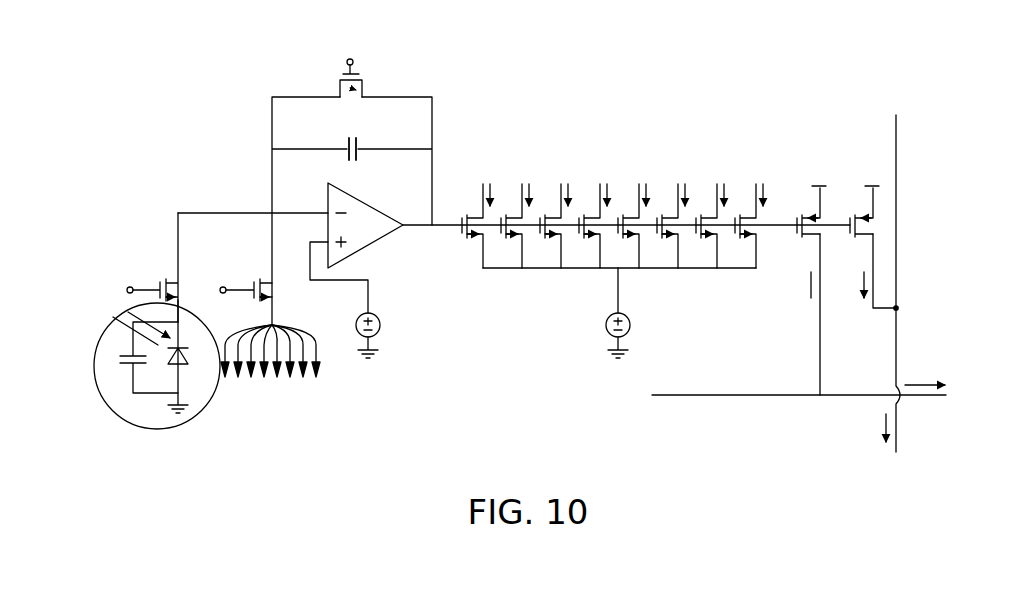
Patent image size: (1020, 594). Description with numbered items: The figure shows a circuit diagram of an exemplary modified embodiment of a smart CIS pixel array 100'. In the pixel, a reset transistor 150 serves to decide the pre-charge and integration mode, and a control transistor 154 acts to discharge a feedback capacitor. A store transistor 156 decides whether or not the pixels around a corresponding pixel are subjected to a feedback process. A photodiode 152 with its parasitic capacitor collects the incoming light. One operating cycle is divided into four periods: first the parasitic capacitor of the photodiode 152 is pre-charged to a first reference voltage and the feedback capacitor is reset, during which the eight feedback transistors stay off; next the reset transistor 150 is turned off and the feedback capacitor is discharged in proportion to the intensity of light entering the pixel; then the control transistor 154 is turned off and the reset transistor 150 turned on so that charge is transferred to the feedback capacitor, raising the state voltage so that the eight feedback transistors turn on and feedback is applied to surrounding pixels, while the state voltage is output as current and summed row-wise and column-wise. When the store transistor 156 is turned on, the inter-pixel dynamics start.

The smart CIS pixel array 100' is at (537, 261).
The RST transistor 150 is at (165, 278).
The photodiode 152 is at (197, 395).
The CTL transistor 154 is at (366, 86).
The STR transistor 156 is at (258, 278).